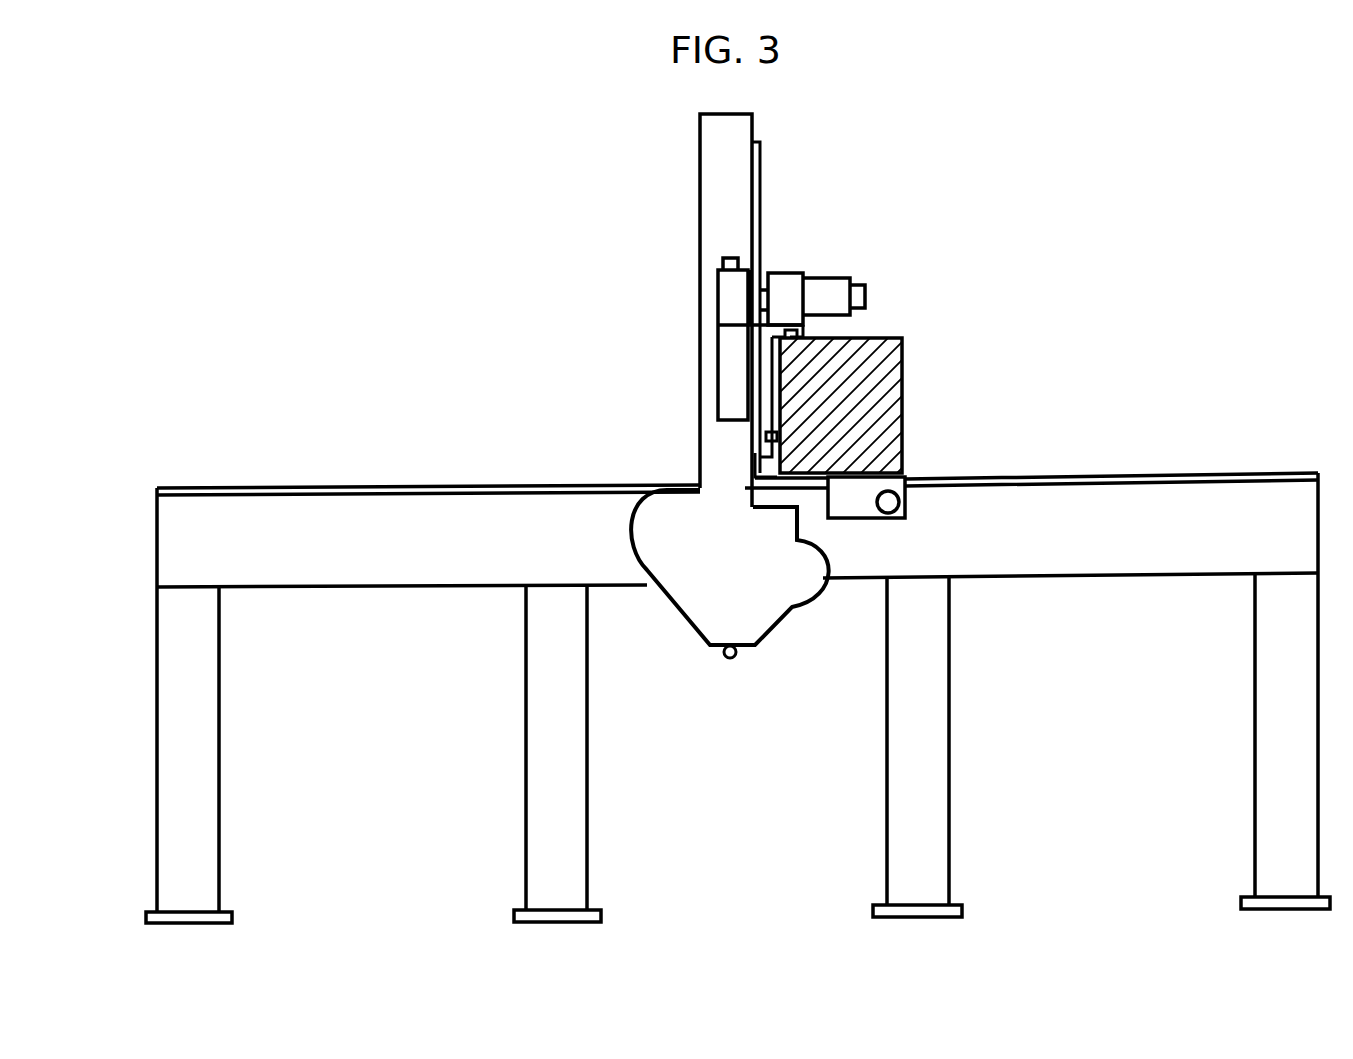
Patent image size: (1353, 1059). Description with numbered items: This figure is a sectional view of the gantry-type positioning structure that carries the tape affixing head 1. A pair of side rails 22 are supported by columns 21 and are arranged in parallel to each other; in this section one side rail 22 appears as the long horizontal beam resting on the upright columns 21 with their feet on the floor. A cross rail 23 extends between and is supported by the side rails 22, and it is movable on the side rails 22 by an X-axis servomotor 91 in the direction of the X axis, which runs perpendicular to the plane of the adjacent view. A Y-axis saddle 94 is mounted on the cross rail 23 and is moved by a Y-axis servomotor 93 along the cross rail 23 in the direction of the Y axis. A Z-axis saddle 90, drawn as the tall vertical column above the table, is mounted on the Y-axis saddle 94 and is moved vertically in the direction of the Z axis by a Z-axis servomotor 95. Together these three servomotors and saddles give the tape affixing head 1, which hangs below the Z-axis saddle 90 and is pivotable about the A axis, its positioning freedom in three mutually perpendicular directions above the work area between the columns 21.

The tape affixing head 1 is at (703, 623).
The columns 21 is at (527, 820).
The side rails 22 is at (1130, 530).
The cross rail 23 is at (890, 395).
The Z-axis saddle 90 is at (740, 120).
The X-axis servomotor 91 is at (885, 518).
The Y-axis servomotor 93 is at (720, 280).
The Y-axis saddle 94 is at (763, 393).
The Z-axis servomotor 95 is at (827, 287).